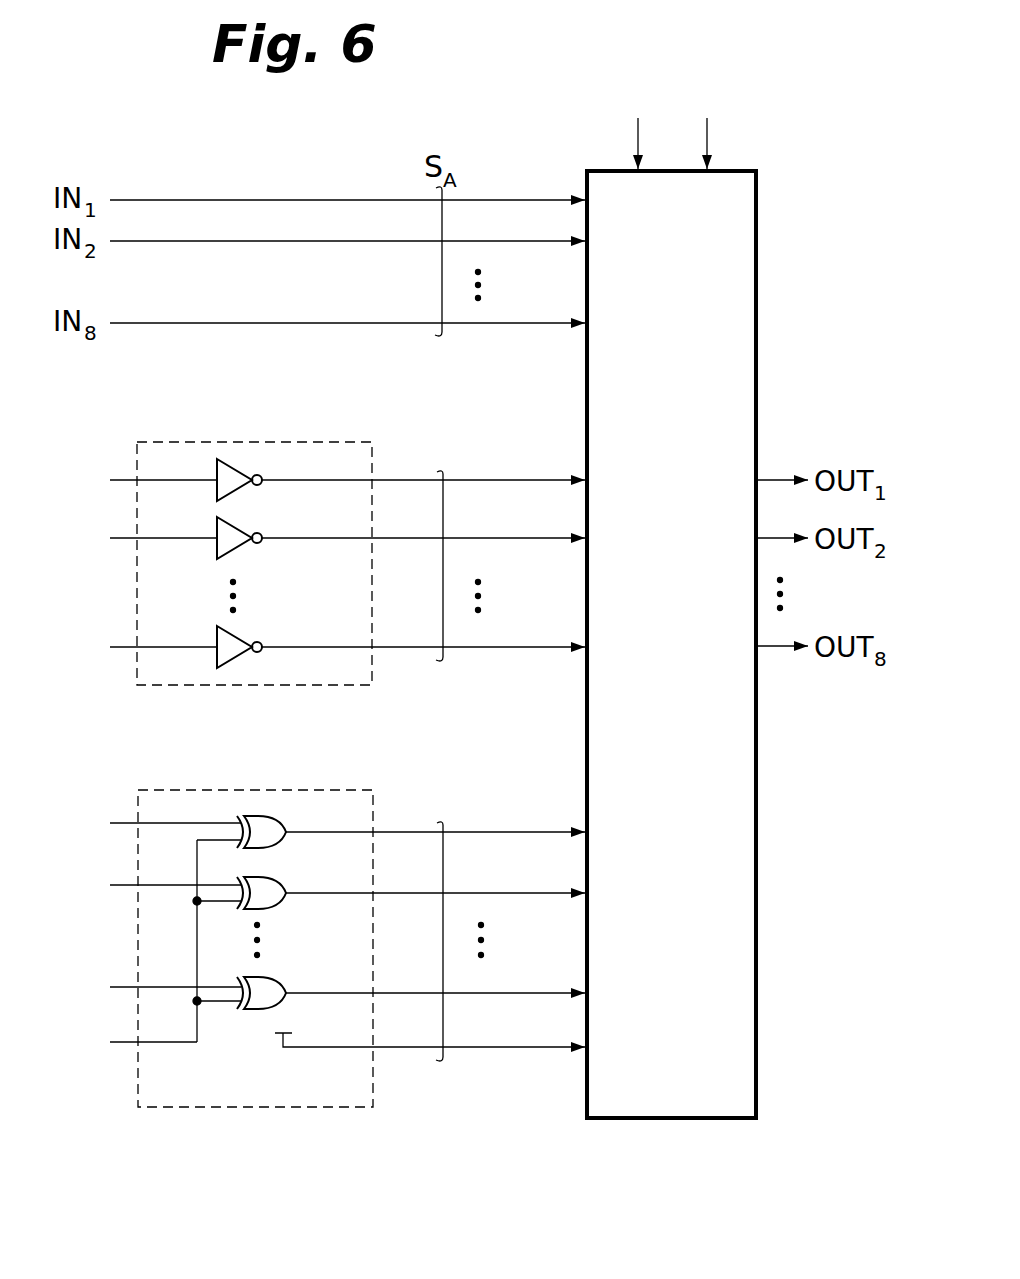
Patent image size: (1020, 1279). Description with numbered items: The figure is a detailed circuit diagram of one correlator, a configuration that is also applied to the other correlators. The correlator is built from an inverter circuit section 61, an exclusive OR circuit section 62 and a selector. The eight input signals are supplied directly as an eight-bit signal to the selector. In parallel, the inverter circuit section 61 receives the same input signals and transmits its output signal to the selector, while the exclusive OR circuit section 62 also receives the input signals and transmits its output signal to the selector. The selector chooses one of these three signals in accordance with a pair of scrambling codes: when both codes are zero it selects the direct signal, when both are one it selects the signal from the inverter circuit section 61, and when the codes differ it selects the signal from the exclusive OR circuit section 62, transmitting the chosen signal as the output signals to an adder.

The inverter circuit section 61 is at (315, 442).
The exclusive OR circuit section 62 is at (316, 790).